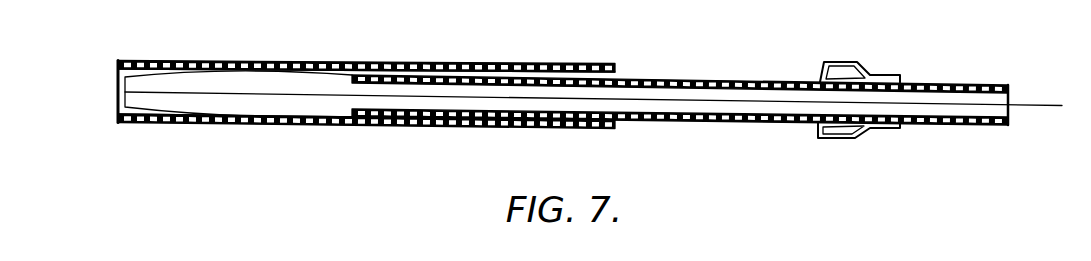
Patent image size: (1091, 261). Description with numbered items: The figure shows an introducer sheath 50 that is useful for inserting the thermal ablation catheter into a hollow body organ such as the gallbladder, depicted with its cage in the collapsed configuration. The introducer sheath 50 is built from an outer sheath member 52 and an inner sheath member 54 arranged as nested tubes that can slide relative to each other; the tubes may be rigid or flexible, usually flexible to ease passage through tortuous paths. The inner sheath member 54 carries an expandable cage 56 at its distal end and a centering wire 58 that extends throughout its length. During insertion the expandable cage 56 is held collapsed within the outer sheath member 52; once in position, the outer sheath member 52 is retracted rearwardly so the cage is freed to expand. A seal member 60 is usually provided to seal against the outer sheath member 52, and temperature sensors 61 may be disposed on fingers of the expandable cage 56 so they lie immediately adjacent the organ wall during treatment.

The introducer sheath 50 is at (221, 34).
The outer sheath member 52 is at (247, 126).
The inner sheath member 54 is at (665, 123).
The expandable cage 56 is at (129, 108).
The centering wire 58 is at (1037, 109).
The seal member 60 is at (863, 140).
The temperature sensor 61 is at (245, 113).